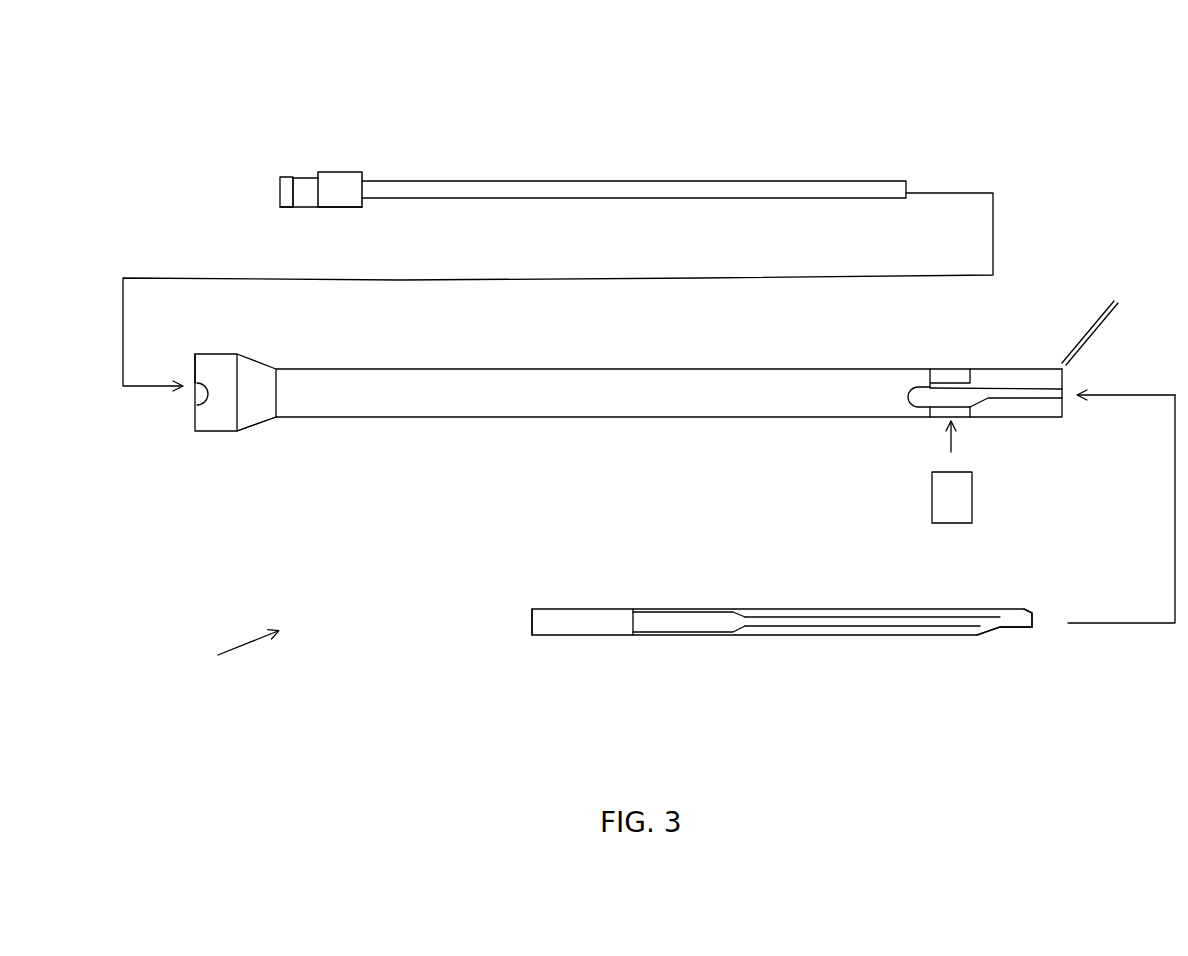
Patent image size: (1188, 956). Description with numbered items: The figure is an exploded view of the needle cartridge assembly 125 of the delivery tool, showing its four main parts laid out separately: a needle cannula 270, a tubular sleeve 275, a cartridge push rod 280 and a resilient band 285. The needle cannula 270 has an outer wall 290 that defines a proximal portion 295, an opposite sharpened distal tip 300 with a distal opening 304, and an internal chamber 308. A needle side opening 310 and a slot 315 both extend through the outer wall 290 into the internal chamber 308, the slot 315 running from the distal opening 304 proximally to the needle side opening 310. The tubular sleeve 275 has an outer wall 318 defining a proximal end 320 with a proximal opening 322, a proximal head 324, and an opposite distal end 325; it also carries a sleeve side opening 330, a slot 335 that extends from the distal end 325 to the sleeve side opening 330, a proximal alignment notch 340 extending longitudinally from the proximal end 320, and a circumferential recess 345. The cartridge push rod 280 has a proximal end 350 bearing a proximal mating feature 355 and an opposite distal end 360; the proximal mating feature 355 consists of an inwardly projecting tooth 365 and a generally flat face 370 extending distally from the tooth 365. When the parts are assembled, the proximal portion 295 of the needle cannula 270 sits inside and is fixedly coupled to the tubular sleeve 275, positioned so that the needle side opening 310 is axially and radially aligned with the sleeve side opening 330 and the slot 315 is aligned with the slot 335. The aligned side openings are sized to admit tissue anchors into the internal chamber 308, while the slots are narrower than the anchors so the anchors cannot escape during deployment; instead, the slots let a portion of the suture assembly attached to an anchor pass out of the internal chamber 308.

The needle cartridge assembly 125 is at (224, 652).
The needle cannula 270 is at (580, 610).
The tubular sleeve 275 is at (673, 420).
The cartridge push rod 280 is at (662, 181).
The resilient band 285 is at (925, 495).
The outer wall 290 is at (653, 640).
The proximal portion 295 is at (578, 637).
The sharpened distal tip 300 is at (1030, 630).
The distal opening 304 is at (1001, 627).
The internal chamber 308 is at (905, 620).
The needle side opening 310 is at (702, 623).
The slot 315 is at (818, 623).
The outer wall 318 is at (575, 420).
The proximal end 320 is at (227, 435).
The proximal opening 322 is at (195, 376).
The proximal head 324 is at (238, 433).
The distal end 325 is at (1099, 315).
The sleeve side opening 330 is at (950, 389).
The slot 335 is at (1015, 387).
The proximal alignment notch 340 is at (197, 395).
The circumferential recess 345 is at (928, 370).
The proximal end 350 is at (320, 175).
The proximal mating feature 355 is at (305, 172).
The distal end 360 is at (901, 180).
The inwardly projecting tooth 365 is at (278, 188).
The flat face 370 is at (306, 195).